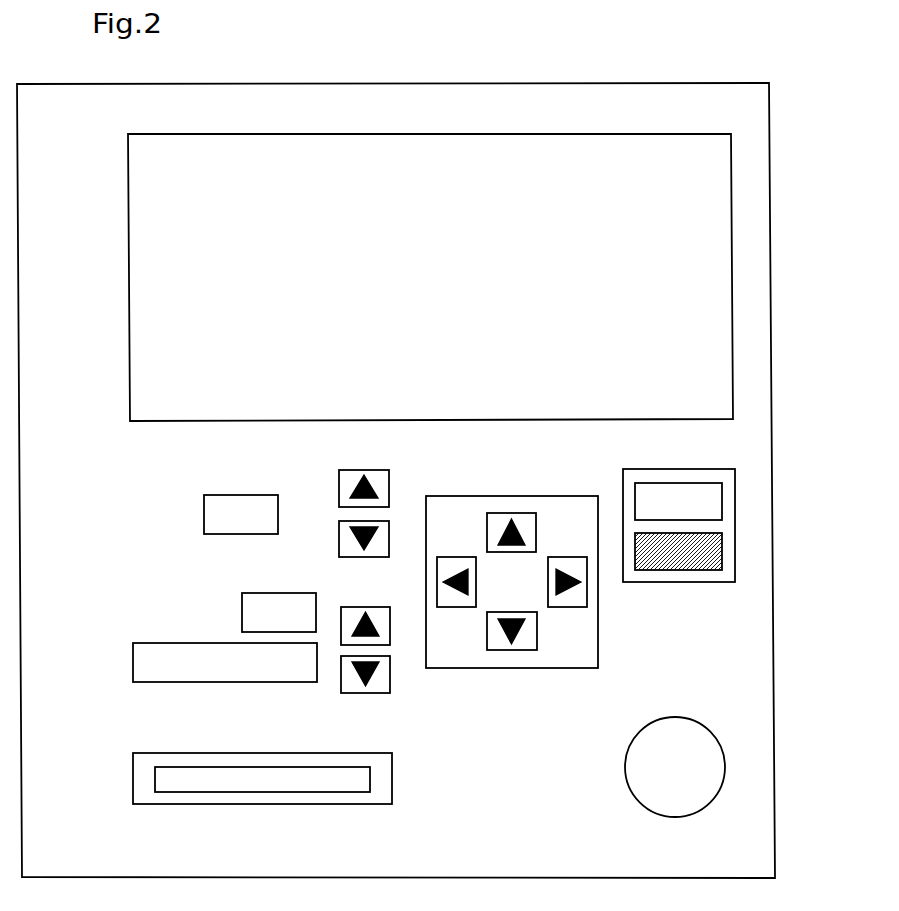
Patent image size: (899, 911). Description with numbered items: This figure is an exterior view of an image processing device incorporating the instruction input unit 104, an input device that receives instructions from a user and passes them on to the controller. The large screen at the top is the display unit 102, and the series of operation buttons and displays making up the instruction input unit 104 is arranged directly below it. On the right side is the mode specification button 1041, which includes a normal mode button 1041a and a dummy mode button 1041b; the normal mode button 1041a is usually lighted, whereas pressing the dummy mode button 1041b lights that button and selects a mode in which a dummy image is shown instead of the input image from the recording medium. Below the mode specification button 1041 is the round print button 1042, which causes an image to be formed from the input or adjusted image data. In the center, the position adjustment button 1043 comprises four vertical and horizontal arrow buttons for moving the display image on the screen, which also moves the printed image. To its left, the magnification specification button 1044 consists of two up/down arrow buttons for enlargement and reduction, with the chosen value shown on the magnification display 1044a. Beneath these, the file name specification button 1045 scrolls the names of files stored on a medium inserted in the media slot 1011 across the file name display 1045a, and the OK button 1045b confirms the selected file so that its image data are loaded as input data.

The display unit 102 is at (453, 135).
The instruction input unit 104 is at (745, 467).
The media slot 1011 is at (305, 792).
The mode specification button 1041 is at (735, 549).
The normal mode button 1041a is at (722, 505).
The dummy mode button 1041b is at (722, 550).
The print button 1042 is at (688, 815).
The position adjustment button 1043 is at (577, 474).
The magnification specification button 1044 is at (372, 462).
The magnification display 1044a is at (230, 494).
The file name specification button 1045 is at (398, 679).
The file name display 1045a is at (227, 683).
The OK button 1045b is at (260, 593).